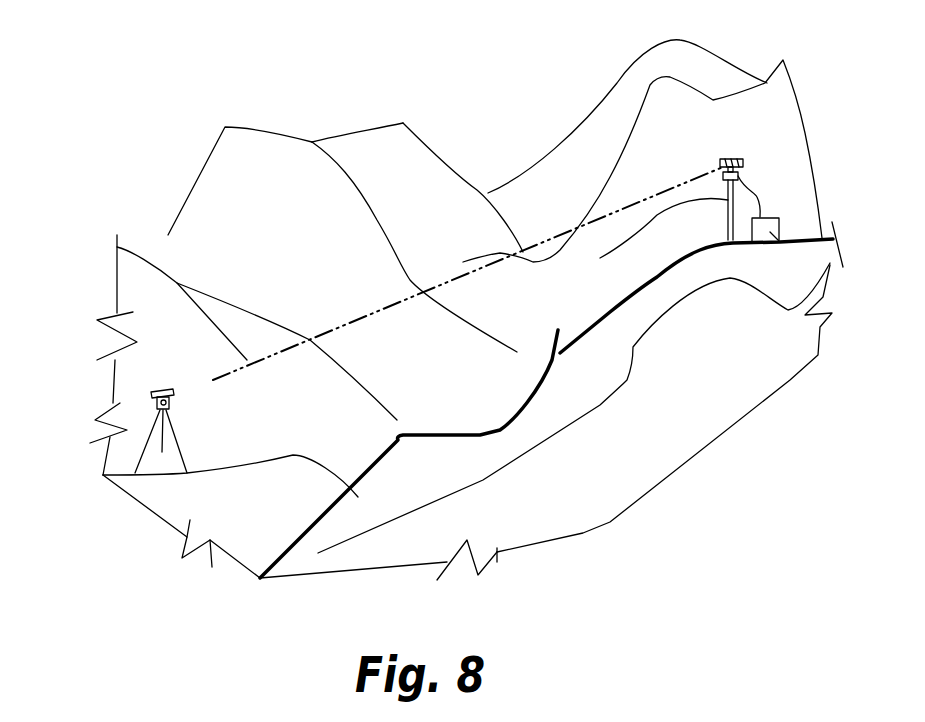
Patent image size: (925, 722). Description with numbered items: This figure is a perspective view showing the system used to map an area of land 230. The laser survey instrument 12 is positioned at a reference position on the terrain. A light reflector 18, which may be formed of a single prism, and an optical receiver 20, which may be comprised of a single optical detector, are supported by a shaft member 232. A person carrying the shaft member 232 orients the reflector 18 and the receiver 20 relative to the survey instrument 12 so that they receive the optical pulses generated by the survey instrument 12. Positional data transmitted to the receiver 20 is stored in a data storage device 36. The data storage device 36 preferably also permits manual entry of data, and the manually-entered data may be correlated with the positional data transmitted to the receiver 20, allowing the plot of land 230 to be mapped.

The laser survey instrument 12 is at (140, 394).
The light reflector 18 is at (733, 146).
The optical receiver 20 is at (742, 176).
The data storage device 36 is at (782, 243).
The area of land 230 is at (457, 234).
The shaft member 232 is at (468, 273).